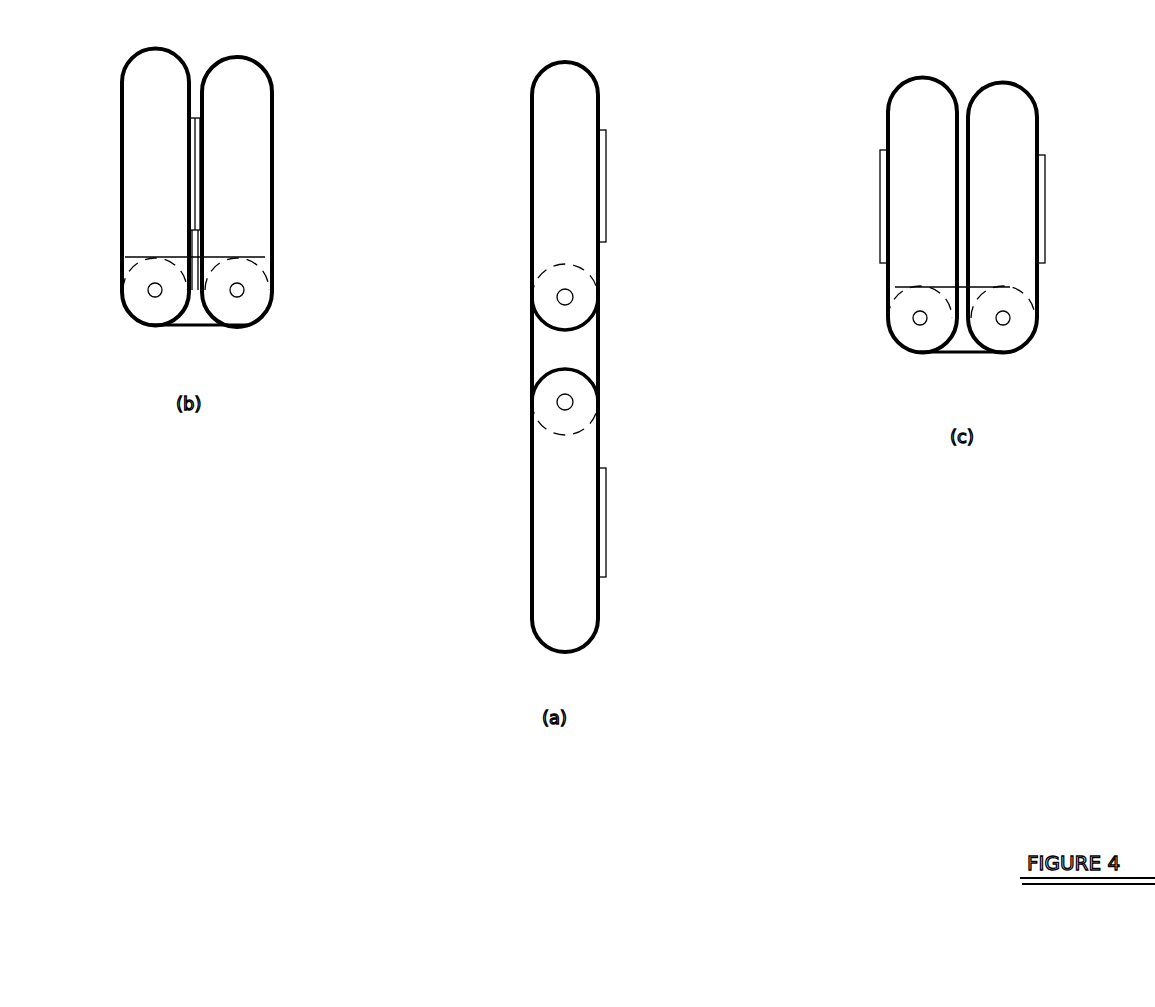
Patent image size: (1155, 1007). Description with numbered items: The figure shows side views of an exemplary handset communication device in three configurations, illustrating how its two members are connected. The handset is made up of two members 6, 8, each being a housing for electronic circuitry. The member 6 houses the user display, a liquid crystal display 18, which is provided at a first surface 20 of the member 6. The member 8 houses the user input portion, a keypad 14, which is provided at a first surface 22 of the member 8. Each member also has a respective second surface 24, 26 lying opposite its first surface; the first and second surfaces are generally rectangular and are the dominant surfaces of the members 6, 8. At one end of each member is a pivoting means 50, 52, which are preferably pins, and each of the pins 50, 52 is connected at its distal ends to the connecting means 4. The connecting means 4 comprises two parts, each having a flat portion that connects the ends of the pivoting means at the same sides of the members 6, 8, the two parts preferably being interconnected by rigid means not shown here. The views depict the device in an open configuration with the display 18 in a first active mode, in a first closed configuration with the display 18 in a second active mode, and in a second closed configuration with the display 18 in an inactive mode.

The connecting means 4 is at (200, 325).
The member 6 is at (150, 68).
The member 8 is at (232, 72).
The keypad 14 is at (610, 522).
The display 18 is at (608, 178).
The first surface 20 is at (600, 108).
The first surface 22 is at (600, 612).
The second surface 24 is at (120, 110).
The second surface 26 is at (275, 108).
The pivoting means 50 is at (155, 298).
The pivoting means 52 is at (240, 298).